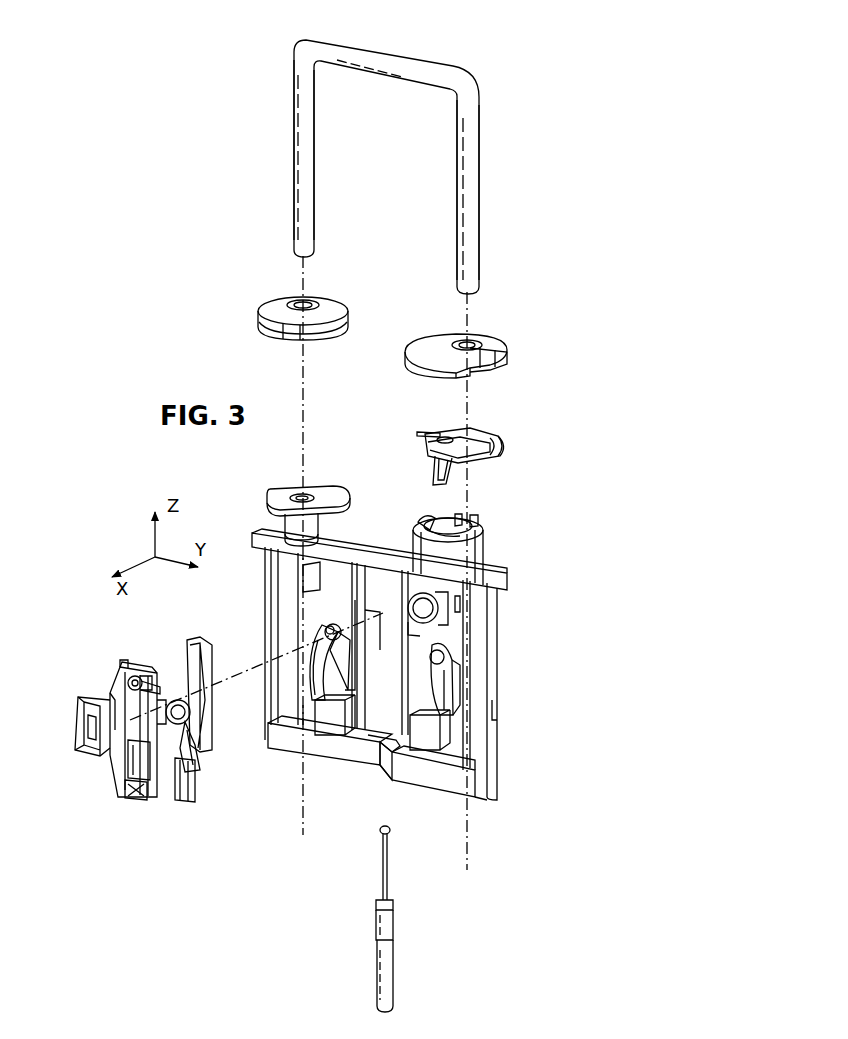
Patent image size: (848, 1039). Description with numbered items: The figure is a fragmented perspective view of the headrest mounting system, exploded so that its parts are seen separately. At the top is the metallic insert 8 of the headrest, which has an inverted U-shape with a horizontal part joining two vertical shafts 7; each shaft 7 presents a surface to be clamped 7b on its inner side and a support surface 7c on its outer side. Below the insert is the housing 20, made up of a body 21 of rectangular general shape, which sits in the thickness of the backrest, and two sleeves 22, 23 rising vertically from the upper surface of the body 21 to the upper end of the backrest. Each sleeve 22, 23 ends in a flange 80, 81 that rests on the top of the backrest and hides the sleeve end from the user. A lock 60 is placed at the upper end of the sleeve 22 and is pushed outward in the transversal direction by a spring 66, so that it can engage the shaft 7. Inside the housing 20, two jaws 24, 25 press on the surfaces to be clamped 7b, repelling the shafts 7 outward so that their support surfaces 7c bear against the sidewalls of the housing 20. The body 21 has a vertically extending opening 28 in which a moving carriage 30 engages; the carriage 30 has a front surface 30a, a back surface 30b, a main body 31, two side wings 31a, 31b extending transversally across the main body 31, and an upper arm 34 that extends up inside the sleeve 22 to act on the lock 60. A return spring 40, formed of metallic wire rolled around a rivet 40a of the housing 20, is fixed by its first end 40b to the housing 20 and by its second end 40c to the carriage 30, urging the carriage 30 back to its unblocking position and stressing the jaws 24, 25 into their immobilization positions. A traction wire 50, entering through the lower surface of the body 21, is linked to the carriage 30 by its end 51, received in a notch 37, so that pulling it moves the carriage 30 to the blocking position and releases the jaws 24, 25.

The vertical shaft 7 is at (299, 110).
The surface to be clamped 7b is at (316, 183).
The support surface 7c is at (292, 180).
The metallic insert 8 is at (431, 73).
The flange 80 is at (268, 313).
The flange 81 is at (485, 345).
The lock 60 is at (505, 443).
The spring 66 is at (423, 428).
The sleeve 23 is at (292, 522).
The sleeve 22 is at (470, 565).
The housing 20 is at (483, 798).
The body 21 is at (480, 748).
The opening 28 is at (383, 710).
The rivet 40a is at (433, 612).
The jaw 24 is at (330, 652).
The jaw 25 is at (440, 672).
The traction wire 50 is at (388, 862).
The end of traction wire 51 is at (385, 826).
The moving carriage 30 is at (162, 814).
The front surface 30a is at (123, 730).
The back surface 30b is at (133, 668).
The main body 31 is at (112, 702).
The side wing 31a is at (78, 712).
The side wing 31b is at (190, 775).
The notch 37 is at (133, 799).
The upper arm 34 is at (207, 672).
The return spring 40 is at (200, 710).
The first end of return spring 40b is at (200, 752).
The second end of return spring 40c is at (140, 680).